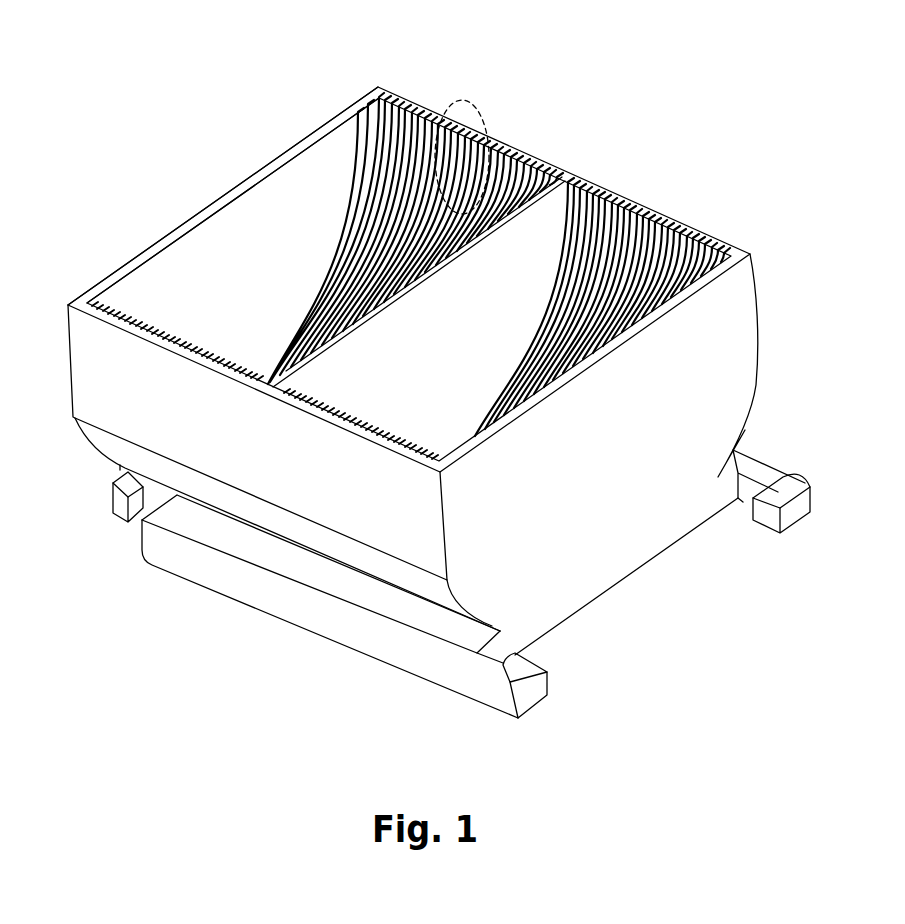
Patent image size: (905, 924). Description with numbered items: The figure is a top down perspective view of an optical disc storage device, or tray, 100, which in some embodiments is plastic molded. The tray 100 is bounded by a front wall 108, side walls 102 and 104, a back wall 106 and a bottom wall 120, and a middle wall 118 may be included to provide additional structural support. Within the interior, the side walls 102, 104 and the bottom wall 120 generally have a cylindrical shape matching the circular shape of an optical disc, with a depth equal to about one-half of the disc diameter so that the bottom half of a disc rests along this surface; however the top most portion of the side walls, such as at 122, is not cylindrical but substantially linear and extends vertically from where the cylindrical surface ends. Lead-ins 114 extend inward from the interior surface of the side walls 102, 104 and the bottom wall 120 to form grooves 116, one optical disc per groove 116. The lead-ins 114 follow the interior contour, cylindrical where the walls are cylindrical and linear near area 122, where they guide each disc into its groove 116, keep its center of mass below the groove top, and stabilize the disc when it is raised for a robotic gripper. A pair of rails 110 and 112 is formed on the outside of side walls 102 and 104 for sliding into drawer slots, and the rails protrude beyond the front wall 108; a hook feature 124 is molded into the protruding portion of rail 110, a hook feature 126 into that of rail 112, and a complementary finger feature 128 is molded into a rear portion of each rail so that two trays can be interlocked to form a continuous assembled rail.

The optical disc storage device 100 is at (248, 66).
The side wall 102 is at (720, 238).
The side wall 104 is at (83, 372).
The back wall 106 is at (207, 213).
The front wall 108 is at (753, 293).
The rail 110 is at (733, 452).
The rail 112 is at (290, 562).
The lead-ins 114 is at (427, 123).
The grooves 116 is at (392, 107).
The middle wall 118 is at (293, 360).
The bottom wall 120 is at (630, 578).
The top most portion of the side walls 122 is at (477, 100).
The hook feature 124 is at (778, 485).
The hook feature 126 is at (512, 665).
The finger feature 128 is at (120, 471).